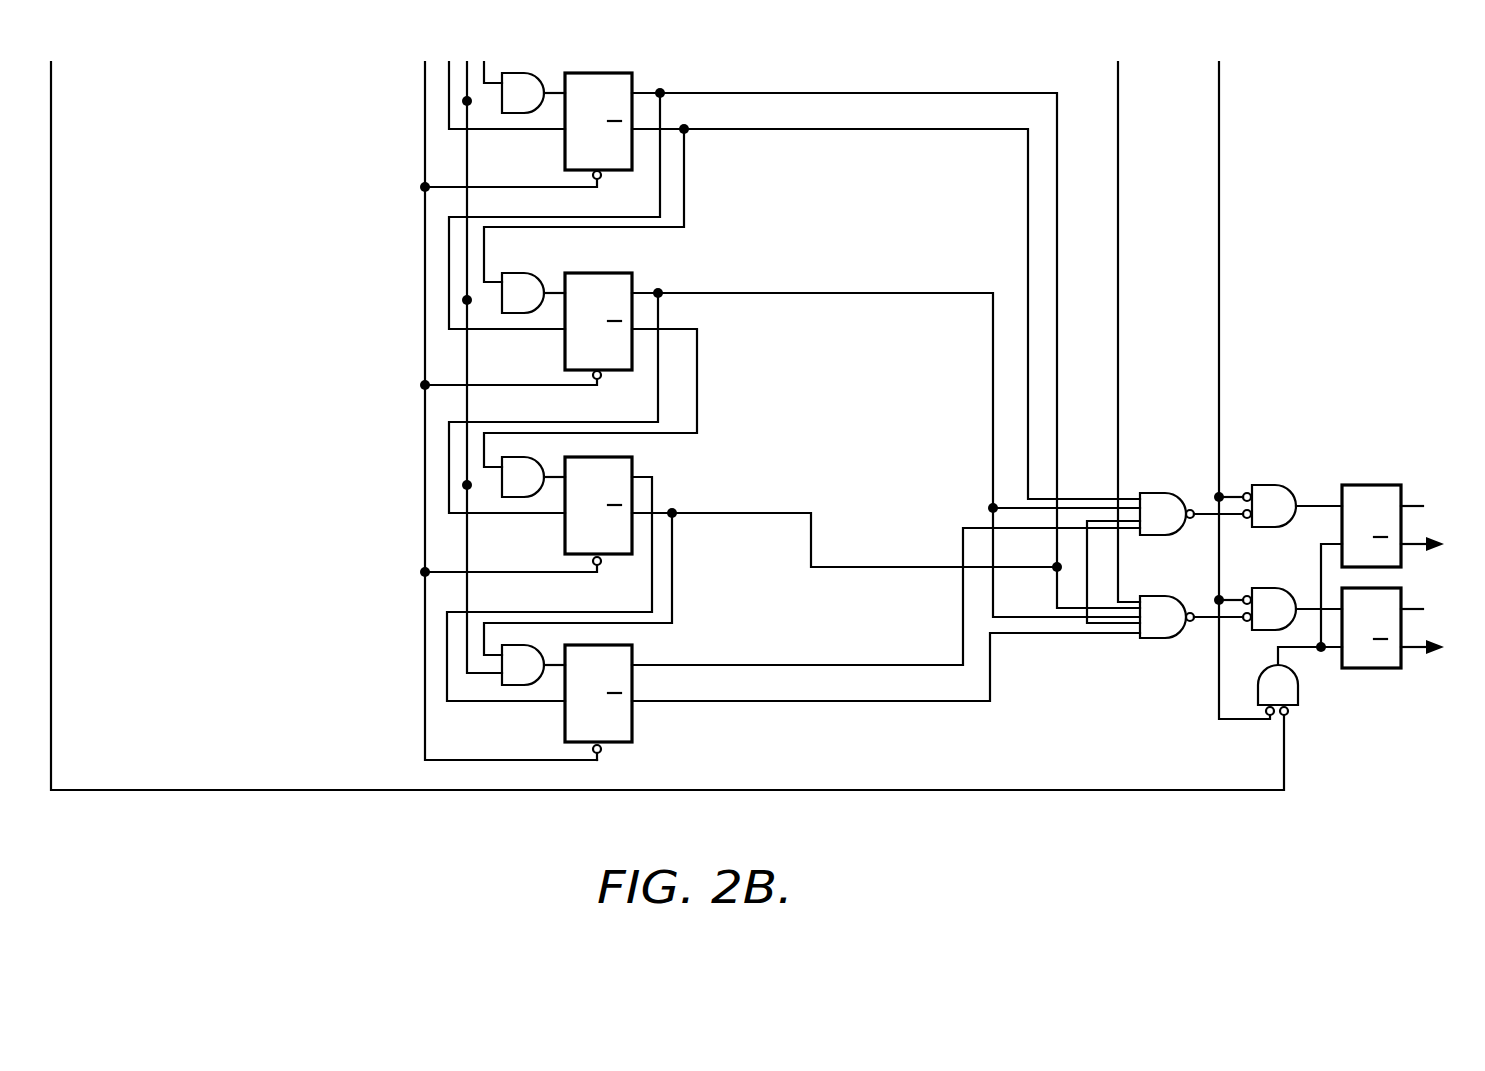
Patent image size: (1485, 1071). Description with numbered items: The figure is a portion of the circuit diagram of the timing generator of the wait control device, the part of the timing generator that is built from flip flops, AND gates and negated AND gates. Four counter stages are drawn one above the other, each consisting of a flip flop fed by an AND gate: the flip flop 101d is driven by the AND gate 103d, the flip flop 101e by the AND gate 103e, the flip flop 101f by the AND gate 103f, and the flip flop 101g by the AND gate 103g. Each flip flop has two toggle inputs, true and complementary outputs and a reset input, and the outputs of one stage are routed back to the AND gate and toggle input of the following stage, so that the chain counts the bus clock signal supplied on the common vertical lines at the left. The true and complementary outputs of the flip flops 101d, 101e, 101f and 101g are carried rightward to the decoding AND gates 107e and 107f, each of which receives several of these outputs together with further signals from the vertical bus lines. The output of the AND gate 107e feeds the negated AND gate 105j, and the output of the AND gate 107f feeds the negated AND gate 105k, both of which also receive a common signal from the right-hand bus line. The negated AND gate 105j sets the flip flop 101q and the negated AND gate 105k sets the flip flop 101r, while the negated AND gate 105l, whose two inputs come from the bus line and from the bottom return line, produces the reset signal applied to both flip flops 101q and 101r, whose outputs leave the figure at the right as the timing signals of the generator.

The flip flop 101d is at (628, 172).
The flip flop 101e is at (628, 372).
The flip flop 101f is at (628, 556).
The flip flop 101g is at (620, 745).
The flip flop 101q is at (1354, 484).
The flip flop 101r is at (1353, 670).
The AND gate 103d is at (538, 112).
The AND gate 103e is at (540, 250).
The AND gate 103f is at (522, 498).
The AND gate 103g is at (518, 686).
The negated AND gate 105j is at (1270, 490).
The negated AND gate 105k is at (1270, 594).
The negated AND gate 105l is at (1292, 700).
The AND gate 107e is at (1160, 500).
The AND gate 107f is at (1152, 636).